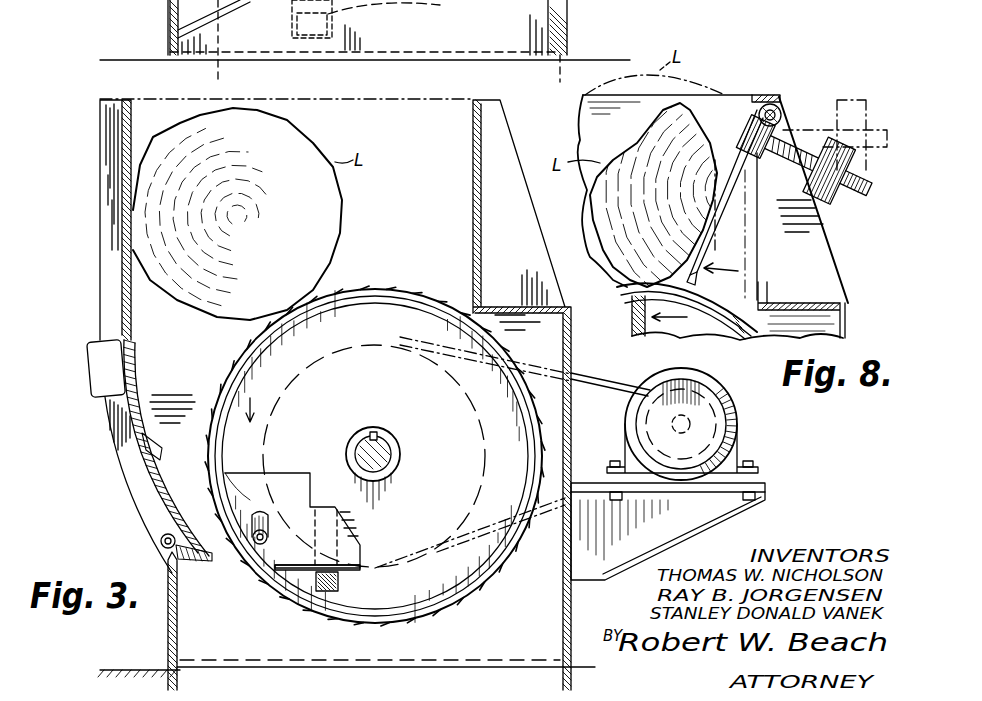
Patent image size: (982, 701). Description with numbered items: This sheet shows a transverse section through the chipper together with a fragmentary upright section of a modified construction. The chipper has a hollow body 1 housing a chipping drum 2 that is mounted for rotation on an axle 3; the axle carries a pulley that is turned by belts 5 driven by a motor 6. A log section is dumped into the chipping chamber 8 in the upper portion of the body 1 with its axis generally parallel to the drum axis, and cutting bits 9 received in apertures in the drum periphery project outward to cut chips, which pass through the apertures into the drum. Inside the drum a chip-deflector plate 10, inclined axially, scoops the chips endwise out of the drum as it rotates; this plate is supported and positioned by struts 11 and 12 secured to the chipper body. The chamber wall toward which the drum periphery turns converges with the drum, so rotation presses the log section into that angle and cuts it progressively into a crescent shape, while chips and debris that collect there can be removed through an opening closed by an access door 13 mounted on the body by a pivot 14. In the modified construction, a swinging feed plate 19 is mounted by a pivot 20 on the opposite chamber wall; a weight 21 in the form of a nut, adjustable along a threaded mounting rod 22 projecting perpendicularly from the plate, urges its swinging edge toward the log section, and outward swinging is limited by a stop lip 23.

In FIG. 3, the hollow body 1 is at (125, 163).
In FIG. 3, the chipping drum 2 is at (385, 290).
In FIG. 3, the axle 3 is at (392, 438).
In FIG. 3, the belts 5 is at (603, 385).
In FIG. 3, the motor 6 is at (727, 423).
In FIG. 3, the chipping chamber 8 is at (415, 105).
In FIG. 8, the chipping chamber 8 is at (592, 118).
In FIG. 3, the cutting bits 9 is at (418, 298).
In FIG. 3, the chip-deflector plate 10 is at (300, 508).
In FIG. 3, the strut 11 is at (255, 538).
In FIG. 3, the strut 12 is at (340, 583).
In FIG. 3, the access door 13 is at (170, 487).
In FIG. 3, the pivot 14 is at (160, 540).
In FIG. 8, the swinging feed plate 19 is at (717, 246).
In FIG. 8, the pivot 20 is at (764, 96).
In FIG. 8, the weight 21 is at (830, 133).
In FIG. 8, the threaded mounting rod 22 is at (793, 135).
In FIG. 8, the stop lip 23 is at (767, 283).